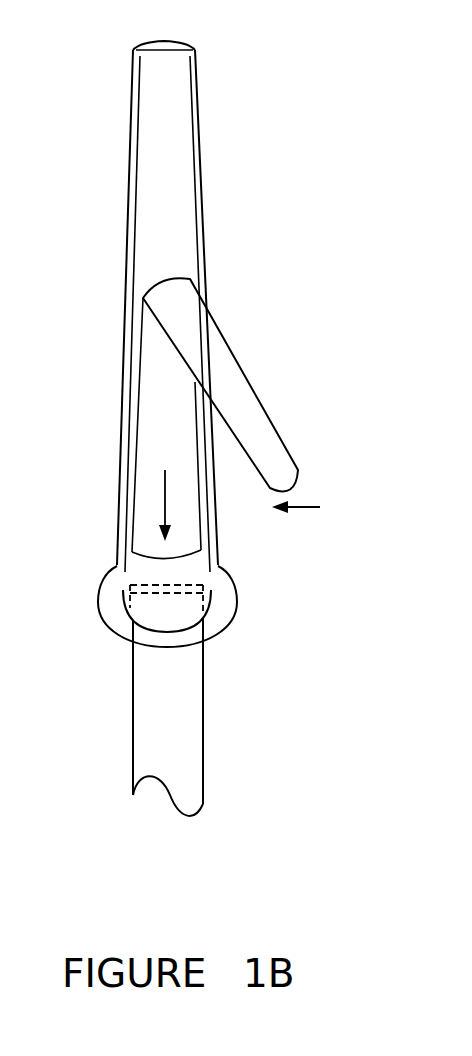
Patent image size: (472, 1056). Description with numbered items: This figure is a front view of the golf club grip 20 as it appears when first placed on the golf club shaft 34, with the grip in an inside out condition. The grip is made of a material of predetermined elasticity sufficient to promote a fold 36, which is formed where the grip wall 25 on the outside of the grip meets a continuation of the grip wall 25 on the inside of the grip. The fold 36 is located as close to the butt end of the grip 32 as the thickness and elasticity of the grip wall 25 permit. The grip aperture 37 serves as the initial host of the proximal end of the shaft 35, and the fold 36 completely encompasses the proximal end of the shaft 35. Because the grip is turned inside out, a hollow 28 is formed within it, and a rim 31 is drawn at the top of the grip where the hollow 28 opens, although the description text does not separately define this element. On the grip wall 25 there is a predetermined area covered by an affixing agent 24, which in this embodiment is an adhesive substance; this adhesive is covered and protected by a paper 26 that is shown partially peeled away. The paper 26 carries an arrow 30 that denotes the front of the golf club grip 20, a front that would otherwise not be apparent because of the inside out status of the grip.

The golf club grip 20 is at (322, 511).
The affixing agent 24 is at (154, 160).
The grip wall 25 is at (160, 230).
The paper 26 is at (195, 313).
The hollow 28 is at (150, 43).
The arrow 30 is at (163, 502).
The top rim 31 is at (135, 49).
The butt end of the grip 32 is at (136, 588).
The golf club shaft 34 is at (203, 687).
The proximal end of the shaft 35 is at (162, 597).
The fold 36 is at (123, 637).
The grip aperture 37 is at (208, 610).